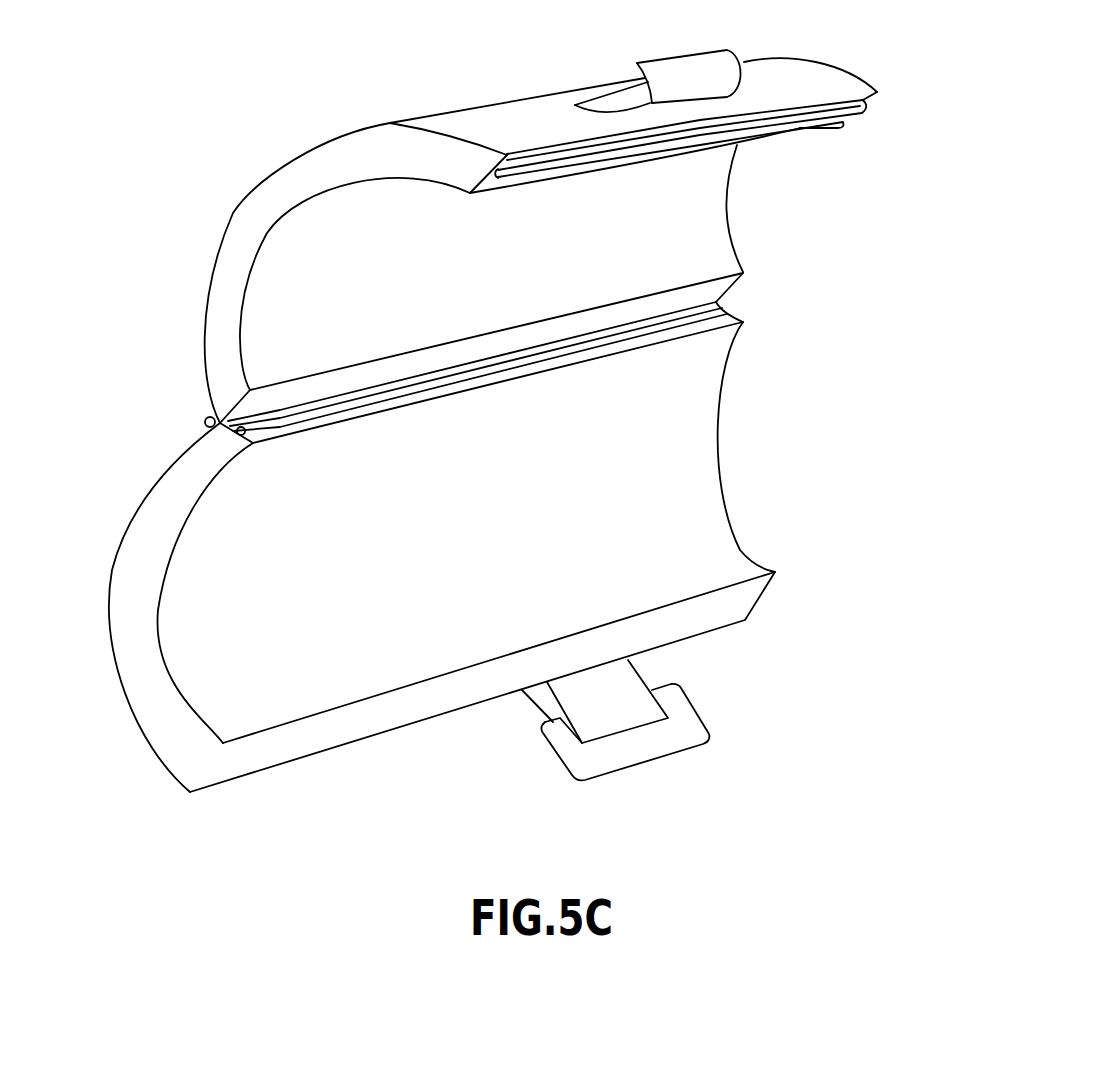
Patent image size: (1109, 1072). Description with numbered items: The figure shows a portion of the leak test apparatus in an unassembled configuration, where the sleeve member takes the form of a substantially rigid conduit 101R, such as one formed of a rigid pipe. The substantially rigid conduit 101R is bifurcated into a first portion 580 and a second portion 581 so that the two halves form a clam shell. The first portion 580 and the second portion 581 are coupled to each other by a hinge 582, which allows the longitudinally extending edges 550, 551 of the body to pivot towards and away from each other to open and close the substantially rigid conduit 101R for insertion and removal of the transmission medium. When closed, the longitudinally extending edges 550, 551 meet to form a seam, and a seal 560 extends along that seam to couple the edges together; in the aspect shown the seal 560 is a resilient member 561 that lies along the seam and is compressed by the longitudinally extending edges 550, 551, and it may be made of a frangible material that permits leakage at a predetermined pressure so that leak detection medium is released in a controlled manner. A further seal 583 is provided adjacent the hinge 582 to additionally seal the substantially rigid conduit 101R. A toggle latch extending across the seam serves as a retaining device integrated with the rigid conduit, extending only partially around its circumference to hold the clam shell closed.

The substantially rigid conduit 101R is at (310, 145).
The first portion 580 is at (528, 123).
The longitudinally extending edge 551 is at (885, 75).
The seal 560 is at (863, 116).
The resilient member 561 is at (800, 128).
The seal 583 is at (733, 312).
The hinge 582 is at (206, 420).
The second portion 581 is at (152, 727).
The longitudinally extending edge 550 is at (512, 710).